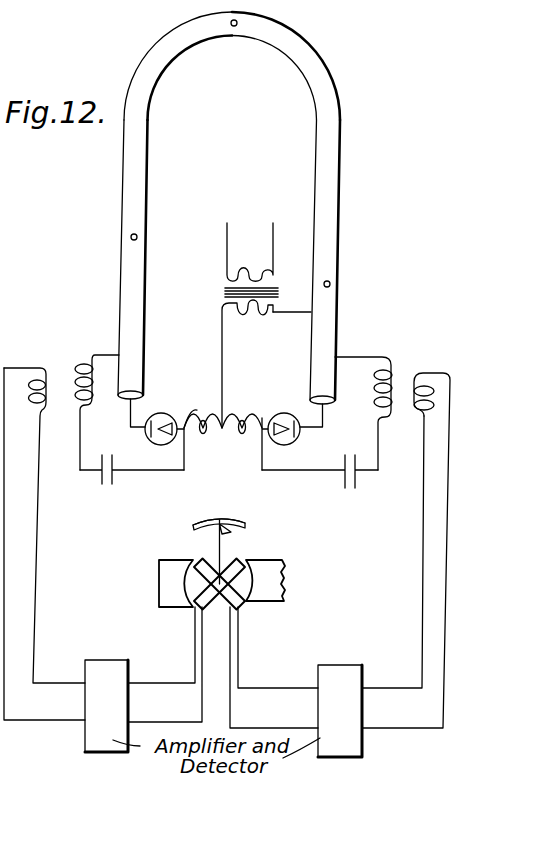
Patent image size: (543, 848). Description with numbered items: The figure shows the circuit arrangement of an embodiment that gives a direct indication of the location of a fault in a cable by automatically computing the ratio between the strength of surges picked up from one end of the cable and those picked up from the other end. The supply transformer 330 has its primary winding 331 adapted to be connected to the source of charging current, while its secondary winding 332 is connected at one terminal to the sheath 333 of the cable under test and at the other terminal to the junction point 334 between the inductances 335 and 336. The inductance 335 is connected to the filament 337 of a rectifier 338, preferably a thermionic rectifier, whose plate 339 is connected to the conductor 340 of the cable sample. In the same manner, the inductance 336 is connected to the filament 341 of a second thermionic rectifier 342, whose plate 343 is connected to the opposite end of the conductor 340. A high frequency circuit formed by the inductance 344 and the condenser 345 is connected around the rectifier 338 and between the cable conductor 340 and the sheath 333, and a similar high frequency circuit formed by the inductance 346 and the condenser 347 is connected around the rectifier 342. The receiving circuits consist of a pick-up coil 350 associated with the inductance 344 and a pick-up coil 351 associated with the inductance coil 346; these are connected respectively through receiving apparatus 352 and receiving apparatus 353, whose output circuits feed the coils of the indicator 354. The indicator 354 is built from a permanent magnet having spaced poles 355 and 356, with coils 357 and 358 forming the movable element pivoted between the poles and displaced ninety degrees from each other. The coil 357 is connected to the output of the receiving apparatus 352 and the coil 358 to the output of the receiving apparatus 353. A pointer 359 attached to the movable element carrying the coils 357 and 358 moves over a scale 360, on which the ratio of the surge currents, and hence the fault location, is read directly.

The supply transformer 330 is at (228, 294).
The primary winding 331 is at (237, 273).
The secondary winding 332 is at (243, 316).
The sheath 333 is at (336, 311).
The junction point 334 is at (223, 438).
The inductance 335 is at (204, 418).
The inductance 336 is at (240, 414).
The filament 337 is at (186, 414).
The rectifier 338 is at (165, 442).
The plate 339 is at (173, 394).
The conductor 340 is at (131, 410).
The filament 341 is at (283, 412).
The thermionic rectifier 342 is at (286, 442).
The plate 343 is at (304, 431).
The inductance 344 is at (90, 357).
The condenser 345 is at (105, 484).
The inductance 346 is at (394, 378).
The condenser 347 is at (357, 488).
The pick-up coil 350 is at (40, 380).
The pick-up coil 351 is at (432, 393).
The receiving apparatus 352 is at (110, 668).
The receiving apparatus 353 is at (345, 670).
The indicator 354 is at (224, 550).
The pole 355 is at (160, 582).
The pole 356 is at (283, 572).
The coil 357 is at (230, 568).
The coil 358 is at (205, 567).
The pointer 359 is at (246, 524).
The scale 360 is at (193, 524).